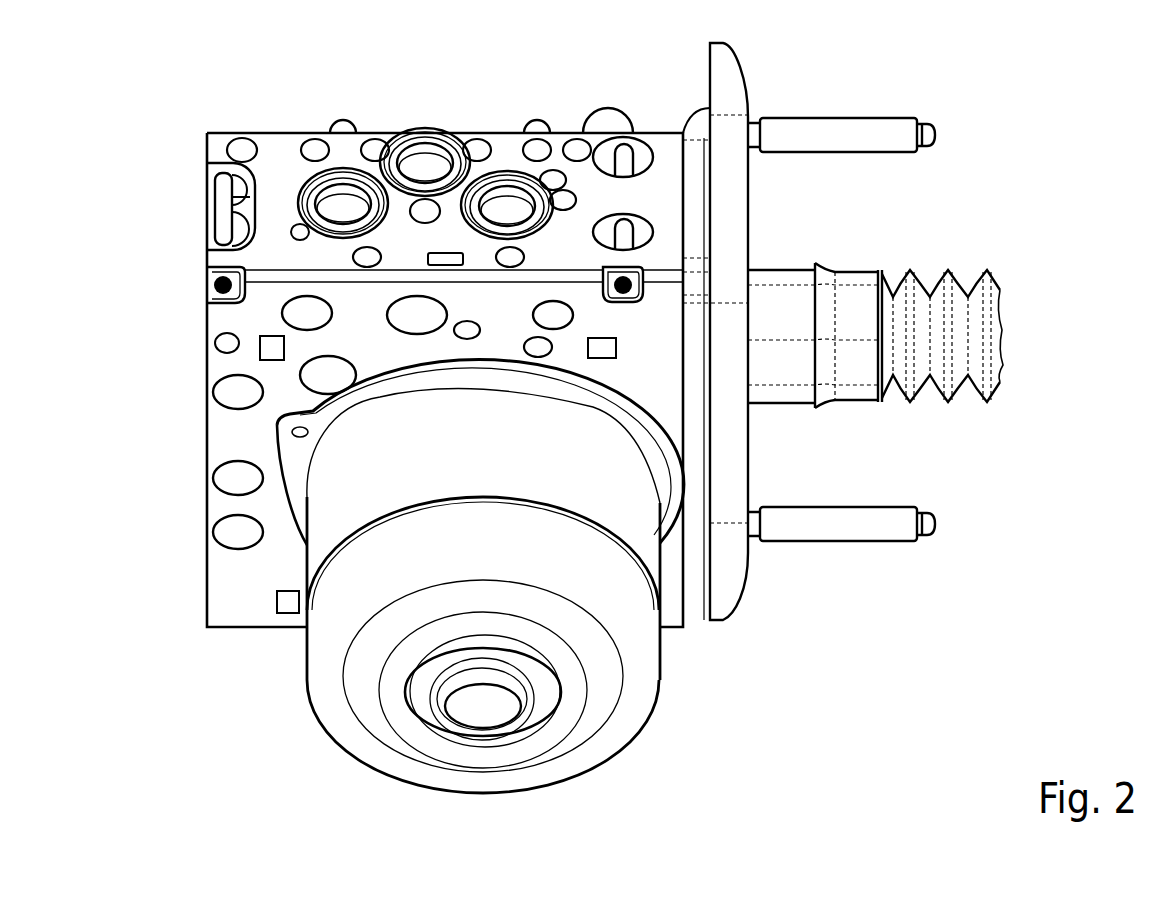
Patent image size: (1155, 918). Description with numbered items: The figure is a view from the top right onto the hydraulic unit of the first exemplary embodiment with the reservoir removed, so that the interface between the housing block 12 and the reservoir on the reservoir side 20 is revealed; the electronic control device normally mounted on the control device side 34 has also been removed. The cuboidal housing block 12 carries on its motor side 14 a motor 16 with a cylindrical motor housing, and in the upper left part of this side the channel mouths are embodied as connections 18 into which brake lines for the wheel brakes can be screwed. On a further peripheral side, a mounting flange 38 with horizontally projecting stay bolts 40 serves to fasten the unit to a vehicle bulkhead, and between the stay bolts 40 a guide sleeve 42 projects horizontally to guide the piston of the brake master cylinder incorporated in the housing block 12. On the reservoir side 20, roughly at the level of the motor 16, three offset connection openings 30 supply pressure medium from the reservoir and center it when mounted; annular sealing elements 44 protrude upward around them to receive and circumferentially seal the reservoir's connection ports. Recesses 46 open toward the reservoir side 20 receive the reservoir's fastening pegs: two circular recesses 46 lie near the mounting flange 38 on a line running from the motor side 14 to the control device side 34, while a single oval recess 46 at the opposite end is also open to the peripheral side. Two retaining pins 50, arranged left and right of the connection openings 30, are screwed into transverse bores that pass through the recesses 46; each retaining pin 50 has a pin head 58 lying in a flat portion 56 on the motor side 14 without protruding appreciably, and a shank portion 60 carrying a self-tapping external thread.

The housing block 12 is at (236, 600).
The motor side 14 is at (377, 342).
The motor 16 is at (586, 745).
The connections 18 is at (222, 390).
The reservoir side 20 is at (295, 191).
The connection openings 30 is at (345, 205).
The control device side 34 is at (282, 132).
The mounting flange 38 is at (735, 80).
The stay bolts 40 is at (835, 137).
The guide sleeve 42 is at (790, 398).
The annular sealing elements 44 is at (392, 134).
The recesses 46 is at (245, 187).
The retaining pins 50 is at (379, 154).
The flat portions 56 is at (205, 288).
The pin head 58 is at (205, 287).
The shank portion 60 is at (218, 200).